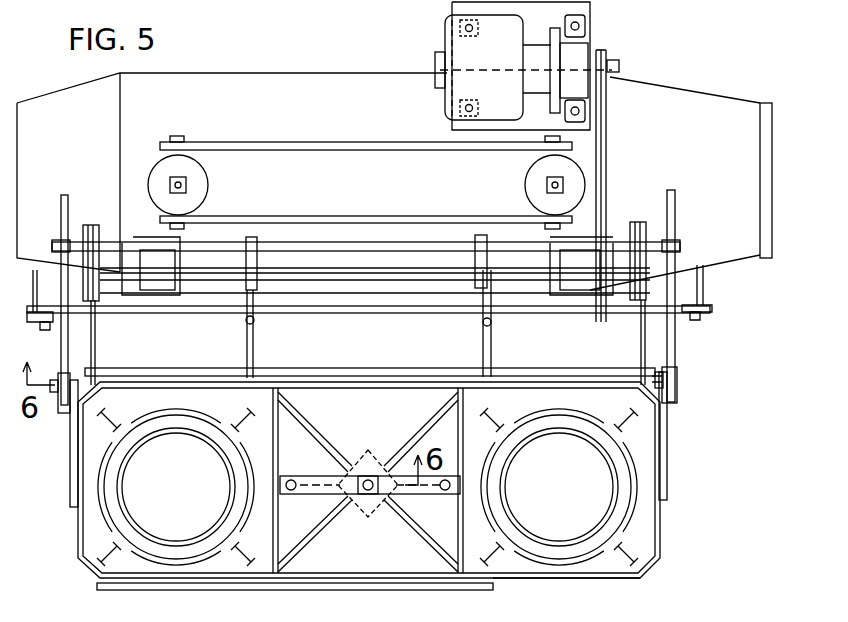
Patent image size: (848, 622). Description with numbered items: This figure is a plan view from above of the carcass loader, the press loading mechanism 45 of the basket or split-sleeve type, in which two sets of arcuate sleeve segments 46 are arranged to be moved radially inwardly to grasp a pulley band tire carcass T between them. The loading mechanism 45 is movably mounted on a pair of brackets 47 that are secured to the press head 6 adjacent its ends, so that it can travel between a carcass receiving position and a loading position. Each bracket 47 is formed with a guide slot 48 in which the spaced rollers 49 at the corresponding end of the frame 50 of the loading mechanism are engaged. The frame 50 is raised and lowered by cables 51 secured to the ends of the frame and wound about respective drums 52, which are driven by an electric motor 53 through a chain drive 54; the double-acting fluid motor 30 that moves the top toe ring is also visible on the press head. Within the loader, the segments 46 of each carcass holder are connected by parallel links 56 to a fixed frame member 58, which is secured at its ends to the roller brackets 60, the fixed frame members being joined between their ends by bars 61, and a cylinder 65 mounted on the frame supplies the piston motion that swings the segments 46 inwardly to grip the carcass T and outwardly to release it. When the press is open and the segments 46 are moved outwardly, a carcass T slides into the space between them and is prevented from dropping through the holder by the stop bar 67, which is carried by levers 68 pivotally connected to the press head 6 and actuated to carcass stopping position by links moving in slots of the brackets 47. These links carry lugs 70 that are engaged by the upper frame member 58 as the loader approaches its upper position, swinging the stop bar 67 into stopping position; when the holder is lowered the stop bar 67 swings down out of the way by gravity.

The press head 6 is at (311, 70).
The double-acting fluid motor 30 is at (208, 184).
The press loading mechanism 45 is at (672, 546).
The arcuate sleeve segments 46 is at (212, 422).
The brackets 47 is at (61, 350).
The guide slot 48 is at (680, 390).
The rollers 49 is at (55, 400).
The frame 50 is at (356, 590).
The cables 51 is at (97, 350).
The drums 52 is at (100, 225).
The electric motor 53 is at (447, 103).
The chain drive 54 is at (602, 157).
The parallel links 56 is at (108, 418).
The fixed frame member 58 is at (627, 582).
The roller brackets 60 is at (70, 478).
The bars 61 is at (292, 480).
The cylinder 65 is at (376, 505).
The stop bar 67 is at (302, 375).
The levers 68 is at (254, 320).
The lugs 70 is at (256, 252).
The pulley band tire carcass T is at (110, 497).